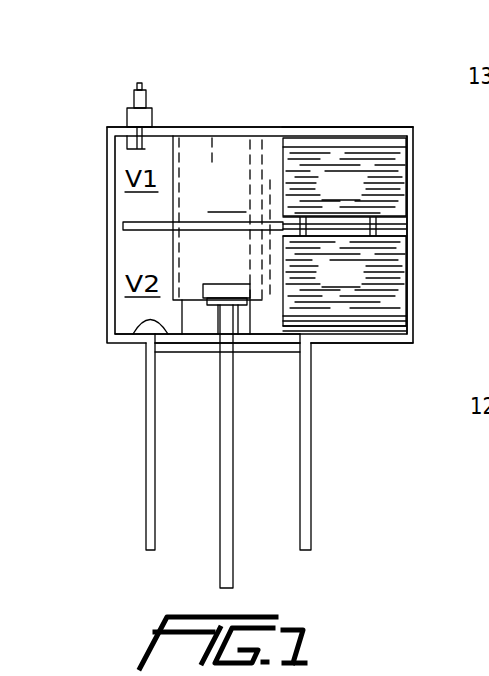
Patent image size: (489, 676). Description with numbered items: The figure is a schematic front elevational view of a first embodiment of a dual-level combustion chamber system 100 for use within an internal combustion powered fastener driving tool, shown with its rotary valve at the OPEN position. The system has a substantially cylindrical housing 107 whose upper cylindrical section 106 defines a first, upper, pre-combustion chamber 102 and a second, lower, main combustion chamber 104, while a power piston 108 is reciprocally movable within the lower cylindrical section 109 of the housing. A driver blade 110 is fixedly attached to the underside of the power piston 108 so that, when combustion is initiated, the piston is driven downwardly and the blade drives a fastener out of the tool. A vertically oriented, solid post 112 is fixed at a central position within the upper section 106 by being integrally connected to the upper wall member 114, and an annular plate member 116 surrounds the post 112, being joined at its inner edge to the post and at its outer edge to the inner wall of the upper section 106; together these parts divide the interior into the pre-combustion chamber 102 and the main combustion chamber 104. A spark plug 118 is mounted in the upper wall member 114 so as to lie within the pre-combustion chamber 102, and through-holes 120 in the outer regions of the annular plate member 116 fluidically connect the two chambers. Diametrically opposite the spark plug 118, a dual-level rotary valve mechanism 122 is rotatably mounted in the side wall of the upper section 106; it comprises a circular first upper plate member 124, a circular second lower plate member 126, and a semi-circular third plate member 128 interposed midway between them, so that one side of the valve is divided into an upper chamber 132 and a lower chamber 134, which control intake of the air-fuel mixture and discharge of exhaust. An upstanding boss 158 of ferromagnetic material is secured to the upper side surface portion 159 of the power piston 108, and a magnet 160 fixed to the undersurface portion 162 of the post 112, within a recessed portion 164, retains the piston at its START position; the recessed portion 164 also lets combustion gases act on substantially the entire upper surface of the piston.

The dual-level combustion chamber system 100 is at (276, 100).
The pre-combustion chamber 102 is at (130, 200).
The main combustion chamber 104 is at (125, 297).
The upper cylindrical section 106 is at (107, 172).
The cylindrical housing 107 is at (318, 337).
The power piston 108 is at (260, 350).
The lower cylindrical section 109 is at (305, 478).
The driver blade 110 is at (220, 458).
The post 112 is at (221, 218).
The upper wall member 114 is at (230, 127).
The annular plate member 116 is at (130, 248).
The spark plug 118 is at (127, 116).
The through-holes 120 is at (115, 232).
The dual-level rotary valve mechanism 122 is at (407, 160).
The first upper plate member 124 is at (327, 127).
The second lower plate member 126 is at (360, 320).
The third plate member 128 is at (340, 236).
The upper chamber 132 is at (344, 177).
The lower chamber 134 is at (344, 283).
The upstanding boss 158 is at (197, 327).
The upper side surface portion 159 is at (190, 330).
The magnet 160 is at (205, 285).
The undersurface portion 162 is at (253, 310).
The recessed portion 164 is at (165, 330).